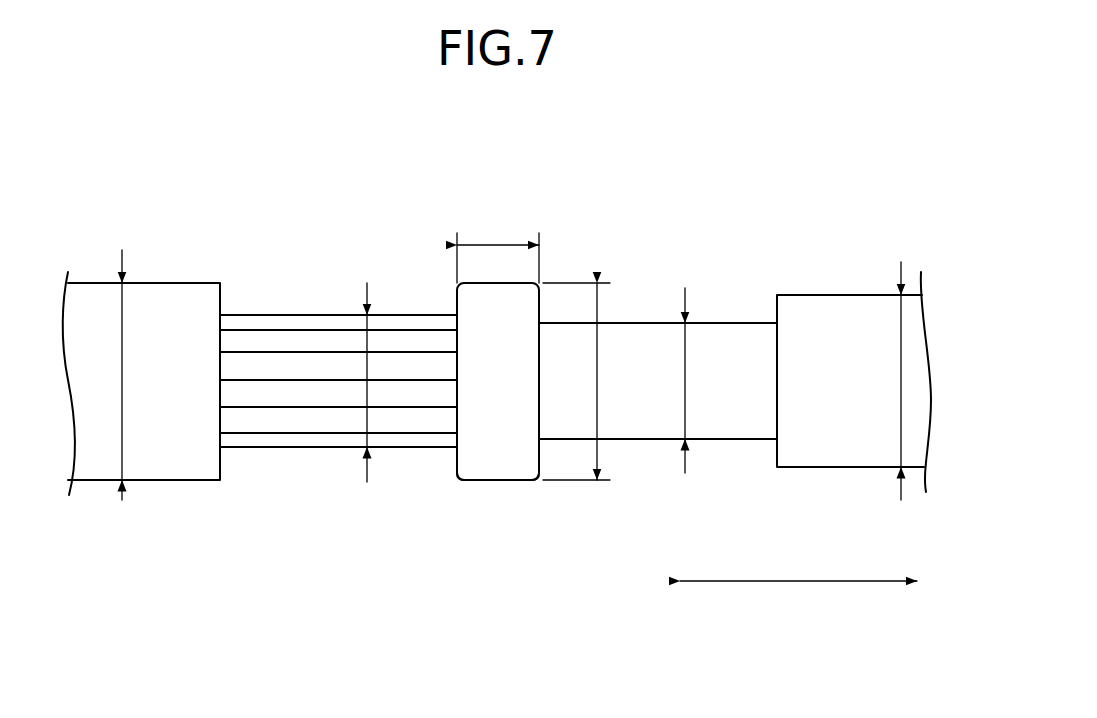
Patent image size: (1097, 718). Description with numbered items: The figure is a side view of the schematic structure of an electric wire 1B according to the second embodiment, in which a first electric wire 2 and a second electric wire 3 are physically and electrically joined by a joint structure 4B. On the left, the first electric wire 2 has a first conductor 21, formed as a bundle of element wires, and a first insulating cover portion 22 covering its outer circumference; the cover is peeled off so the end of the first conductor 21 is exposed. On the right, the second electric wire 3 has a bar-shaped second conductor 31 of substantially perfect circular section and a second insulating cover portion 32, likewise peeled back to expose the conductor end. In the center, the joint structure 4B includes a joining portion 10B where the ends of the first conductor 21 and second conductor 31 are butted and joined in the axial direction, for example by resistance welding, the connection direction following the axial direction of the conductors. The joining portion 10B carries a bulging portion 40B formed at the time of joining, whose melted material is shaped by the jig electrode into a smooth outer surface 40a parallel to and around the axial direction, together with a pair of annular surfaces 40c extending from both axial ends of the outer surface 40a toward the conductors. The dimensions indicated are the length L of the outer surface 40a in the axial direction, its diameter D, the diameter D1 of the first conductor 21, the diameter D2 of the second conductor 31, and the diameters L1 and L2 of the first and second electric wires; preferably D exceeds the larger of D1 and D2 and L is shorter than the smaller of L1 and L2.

The electric wire 1B is at (367, 152).
The first electric wire 2 is at (178, 193).
The first conductor 21 is at (316, 311).
The first insulating cover portion 22 is at (201, 277).
The second electric wire 3 is at (708, 204).
The second conductor 31 is at (733, 320).
The second insulating cover portion 32 is at (842, 292).
The joint structure 4B is at (559, 198).
The joining portion 10B is at (446, 275).
The bulging portion 40B is at (397, 563).
The outer surface 40a is at (500, 468).
The annular surfaces 40c is at (452, 455).
The length of the outer surface in the axial direction L is at (498, 252).
The diameter of the first electric wire L1 is at (122, 352).
The diameter of the second electric wire L2 is at (901, 352).
The diameter of the outer surface D is at (598, 311).
The diameter of the first conductor D1 is at (362, 343).
The diameter of the second conductor D2 is at (685, 353).